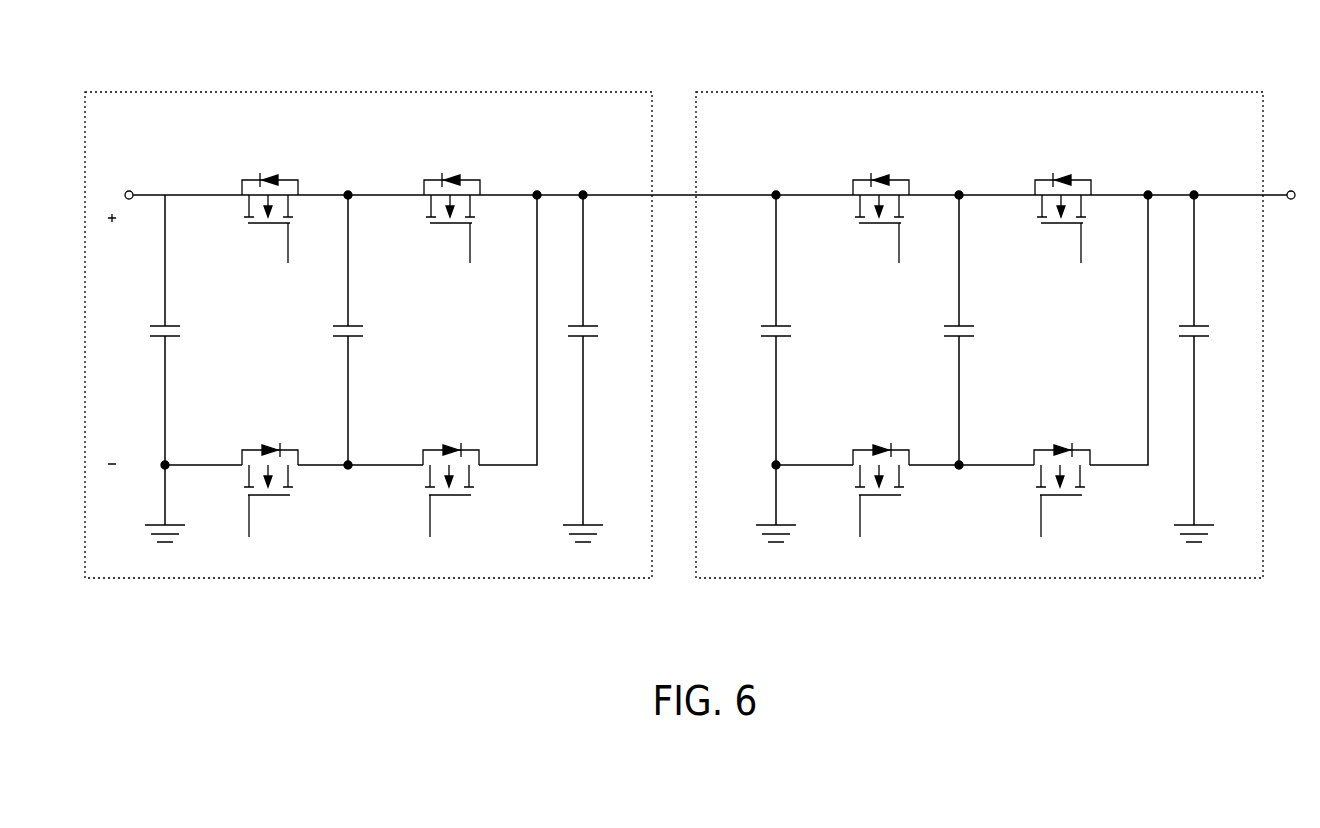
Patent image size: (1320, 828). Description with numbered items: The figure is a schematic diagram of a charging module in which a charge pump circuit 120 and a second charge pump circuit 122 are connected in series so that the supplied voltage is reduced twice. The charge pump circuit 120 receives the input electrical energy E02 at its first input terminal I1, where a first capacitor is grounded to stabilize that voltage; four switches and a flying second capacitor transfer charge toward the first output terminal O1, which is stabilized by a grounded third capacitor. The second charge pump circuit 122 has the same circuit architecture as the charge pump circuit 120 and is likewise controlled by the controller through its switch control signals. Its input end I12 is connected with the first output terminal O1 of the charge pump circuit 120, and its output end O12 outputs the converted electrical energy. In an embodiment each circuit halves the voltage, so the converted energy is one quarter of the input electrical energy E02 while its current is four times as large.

The charge pump circuit 120 is at (342, 92).
The second charge pump circuit 122 is at (953, 92).
The first input terminal I1 is at (129, 183).
The first output terminal O1 is at (583, 195).
The input end I12 is at (776, 195).
The output end O12 is at (1293, 183).
The input electrical energy E02 is at (114, 339).